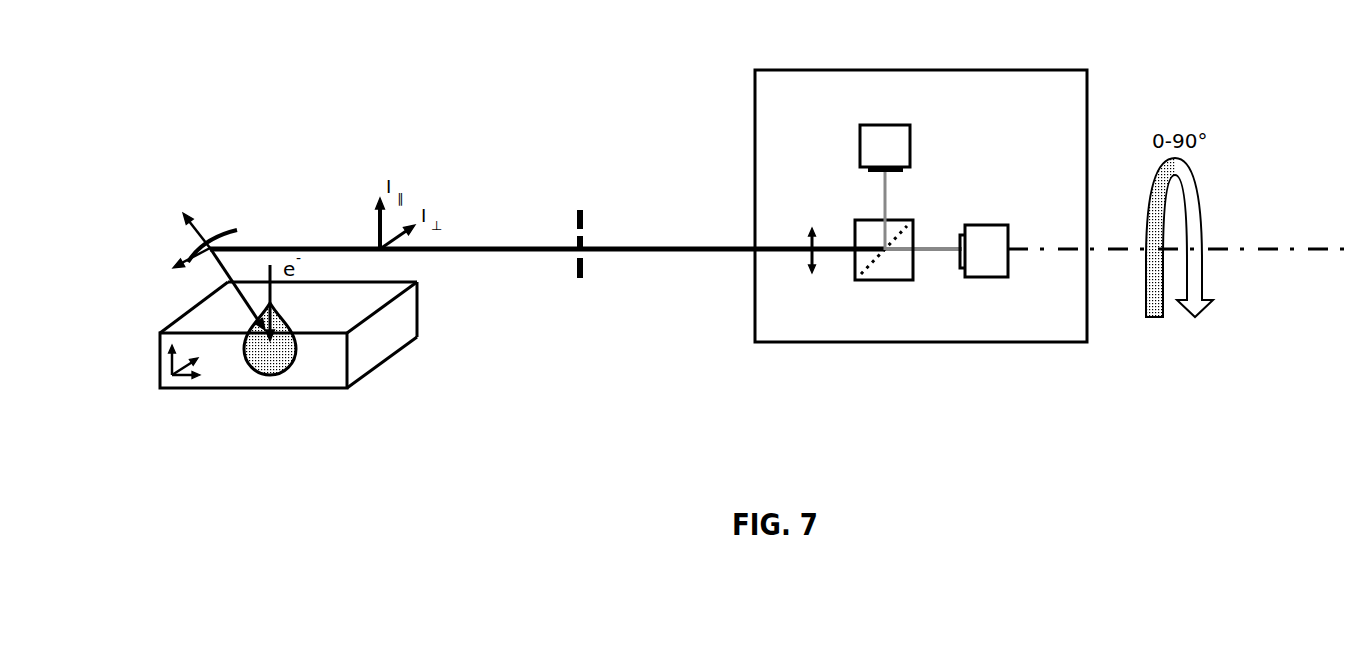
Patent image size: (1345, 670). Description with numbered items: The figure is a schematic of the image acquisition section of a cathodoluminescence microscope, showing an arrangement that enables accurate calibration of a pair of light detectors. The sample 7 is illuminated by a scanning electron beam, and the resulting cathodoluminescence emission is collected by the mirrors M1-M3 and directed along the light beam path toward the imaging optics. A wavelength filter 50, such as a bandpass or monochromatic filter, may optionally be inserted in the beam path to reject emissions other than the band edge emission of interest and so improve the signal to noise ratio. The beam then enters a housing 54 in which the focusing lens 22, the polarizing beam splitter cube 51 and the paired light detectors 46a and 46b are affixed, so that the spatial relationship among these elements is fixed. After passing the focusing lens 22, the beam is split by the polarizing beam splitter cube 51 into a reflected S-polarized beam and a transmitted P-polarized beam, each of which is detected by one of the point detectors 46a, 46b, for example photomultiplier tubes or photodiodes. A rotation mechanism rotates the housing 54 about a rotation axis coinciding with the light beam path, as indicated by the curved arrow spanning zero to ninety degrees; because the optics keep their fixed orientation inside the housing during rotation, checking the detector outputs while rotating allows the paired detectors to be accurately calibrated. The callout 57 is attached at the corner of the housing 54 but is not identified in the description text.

The sample 7 is at (388, 345).
The focusing lens 22 is at (813, 222).
The wavelength filter 50 is at (580, 205).
The polarizing beam splitter cube 51 is at (874, 226).
The housing 54 is at (767, 67).
The rotation mount 57 is at (1087, 70).
The light detector 46a is at (885, 187).
The light detector 46b is at (984, 251).
The mirrors M1-M3 is at (166, 240).